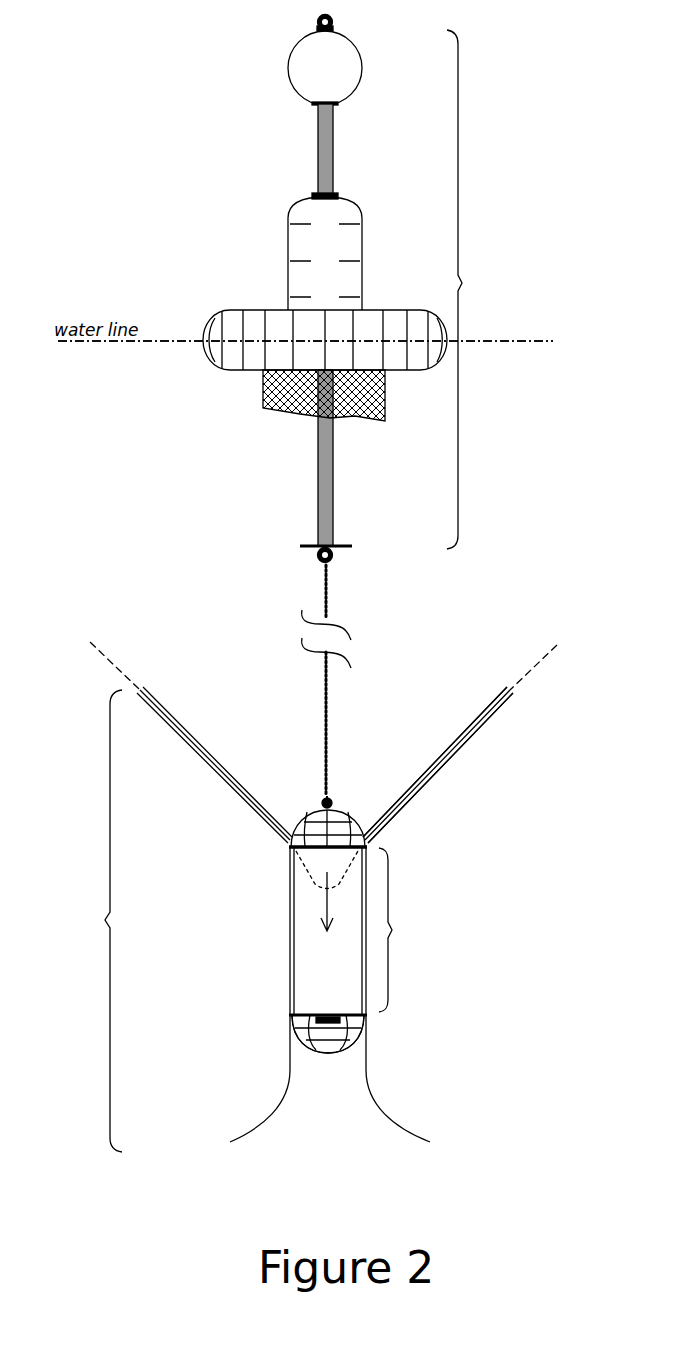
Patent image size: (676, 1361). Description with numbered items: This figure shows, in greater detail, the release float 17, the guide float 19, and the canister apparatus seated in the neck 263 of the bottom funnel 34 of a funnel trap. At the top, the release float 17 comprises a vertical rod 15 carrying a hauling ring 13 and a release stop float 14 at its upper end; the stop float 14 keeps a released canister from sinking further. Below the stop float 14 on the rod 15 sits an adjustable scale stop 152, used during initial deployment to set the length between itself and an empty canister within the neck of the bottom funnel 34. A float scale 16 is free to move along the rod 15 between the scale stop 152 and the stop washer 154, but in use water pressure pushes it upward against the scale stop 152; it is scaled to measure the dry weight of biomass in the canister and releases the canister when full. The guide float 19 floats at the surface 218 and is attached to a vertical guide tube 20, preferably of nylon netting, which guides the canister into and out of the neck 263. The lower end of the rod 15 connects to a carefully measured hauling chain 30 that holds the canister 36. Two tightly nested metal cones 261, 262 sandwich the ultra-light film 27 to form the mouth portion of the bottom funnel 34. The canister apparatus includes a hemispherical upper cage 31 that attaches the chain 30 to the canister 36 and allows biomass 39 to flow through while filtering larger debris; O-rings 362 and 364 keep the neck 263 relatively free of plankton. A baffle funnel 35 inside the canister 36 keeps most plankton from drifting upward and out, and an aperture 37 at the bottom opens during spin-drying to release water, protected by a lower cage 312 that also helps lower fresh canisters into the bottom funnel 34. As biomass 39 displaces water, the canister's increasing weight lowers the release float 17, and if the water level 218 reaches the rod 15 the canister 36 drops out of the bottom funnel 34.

The hauling ring 13 is at (309, 23).
The release stop float 14 is at (298, 68).
The rod 15 is at (314, 148).
The adjustable scale stop 152 is at (312, 192).
The float scale 16 is at (286, 262).
The release float 17 is at (475, 289).
The guide float 19 is at (225, 310).
The guide tube 20 is at (262, 386).
The surface 218 is at (520, 343).
The stop washer 154 is at (306, 545).
The hauling chain 30 is at (318, 587).
The film 27 is at (127, 670).
The nested metal cone 261 is at (462, 735).
The nested metal cone 262 is at (458, 747).
The upper cage 31 is at (306, 820).
The O-ring 362 is at (288, 848).
The neck 263 is at (290, 927).
The baffle funnel 35 is at (305, 878).
The biomass 39 is at (326, 893).
The bottom funnel 34 is at (92, 921).
The canister 36 is at (402, 930).
The O-ring 364 is at (290, 1015).
The aperture 37 is at (312, 1040).
The lower cage 312 is at (360, 1032).